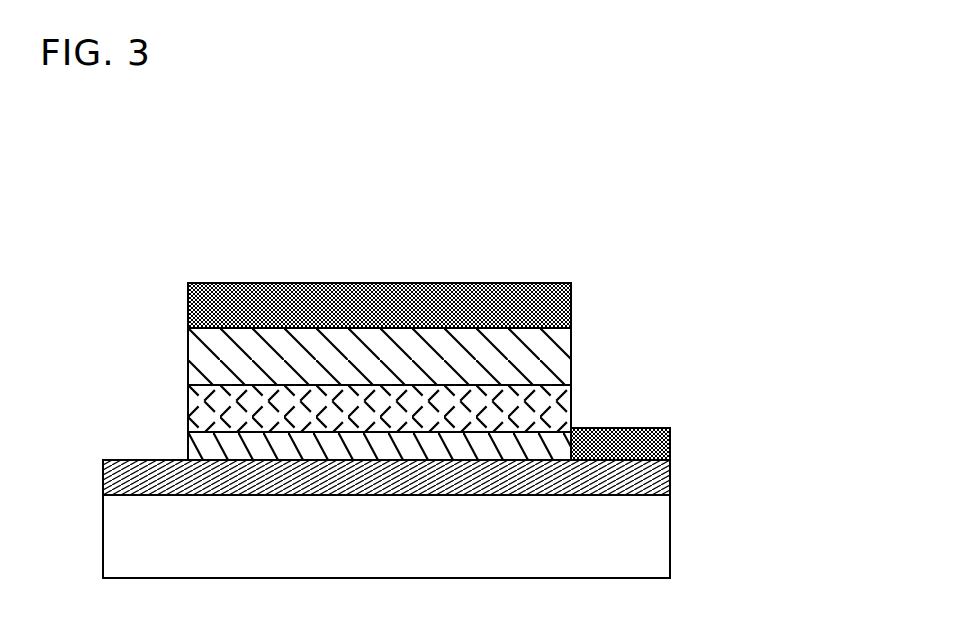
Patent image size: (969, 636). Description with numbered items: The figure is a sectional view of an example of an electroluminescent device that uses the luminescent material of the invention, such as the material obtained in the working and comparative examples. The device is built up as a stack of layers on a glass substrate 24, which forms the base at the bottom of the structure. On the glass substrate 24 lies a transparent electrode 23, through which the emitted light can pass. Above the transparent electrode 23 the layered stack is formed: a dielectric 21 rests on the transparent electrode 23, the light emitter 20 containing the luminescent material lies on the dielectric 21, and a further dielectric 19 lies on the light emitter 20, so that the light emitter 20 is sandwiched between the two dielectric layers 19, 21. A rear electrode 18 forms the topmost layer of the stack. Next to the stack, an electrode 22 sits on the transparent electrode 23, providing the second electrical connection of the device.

The rear electrode 18 is at (580, 285).
The dielectric 19 is at (582, 344).
The light emitter 20 is at (181, 401).
The dielectric 21 is at (178, 445).
The electrode 22 is at (682, 450).
The transparent electrode 23 is at (682, 482).
The glass substrate 24 is at (682, 550).